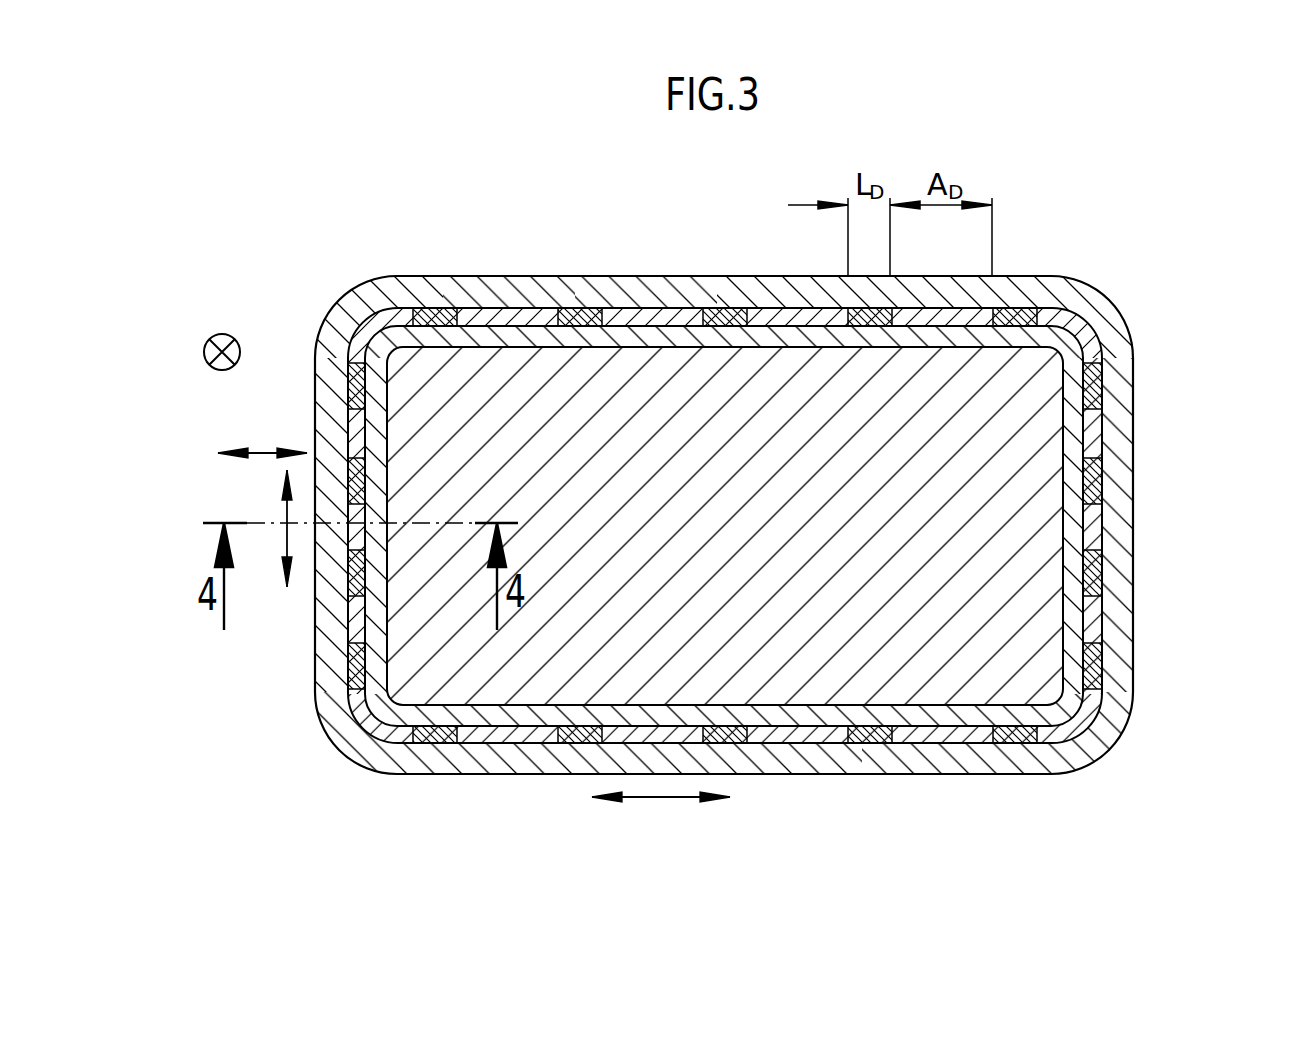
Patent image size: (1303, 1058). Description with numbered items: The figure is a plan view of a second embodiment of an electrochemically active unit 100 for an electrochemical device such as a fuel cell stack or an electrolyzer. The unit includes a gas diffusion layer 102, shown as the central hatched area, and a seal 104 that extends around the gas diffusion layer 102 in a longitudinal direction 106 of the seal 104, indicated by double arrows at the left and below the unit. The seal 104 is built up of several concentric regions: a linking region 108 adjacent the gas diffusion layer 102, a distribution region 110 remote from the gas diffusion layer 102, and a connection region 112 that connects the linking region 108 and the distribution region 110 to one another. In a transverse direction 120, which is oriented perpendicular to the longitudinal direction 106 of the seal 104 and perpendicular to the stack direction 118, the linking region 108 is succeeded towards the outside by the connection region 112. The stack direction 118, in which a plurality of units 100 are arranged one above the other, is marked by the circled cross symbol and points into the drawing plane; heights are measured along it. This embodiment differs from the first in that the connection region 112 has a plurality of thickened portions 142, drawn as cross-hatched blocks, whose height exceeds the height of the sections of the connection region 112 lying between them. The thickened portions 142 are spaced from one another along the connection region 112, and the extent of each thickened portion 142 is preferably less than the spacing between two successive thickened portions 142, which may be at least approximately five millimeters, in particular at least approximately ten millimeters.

The electrochemically active unit 100 is at (745, 527).
The gas diffusion layer 102 is at (1035, 432).
The seal 104 is at (743, 527).
The longitudinal direction 106 is at (287, 515).
The linking region 108 is at (1077, 628).
The distribution region 110 is at (1122, 675).
The connection region 112 is at (1090, 610).
The stack direction 118 is at (221, 333).
The transverse direction 120 is at (265, 453).
The thickened portions 142 is at (443, 318).